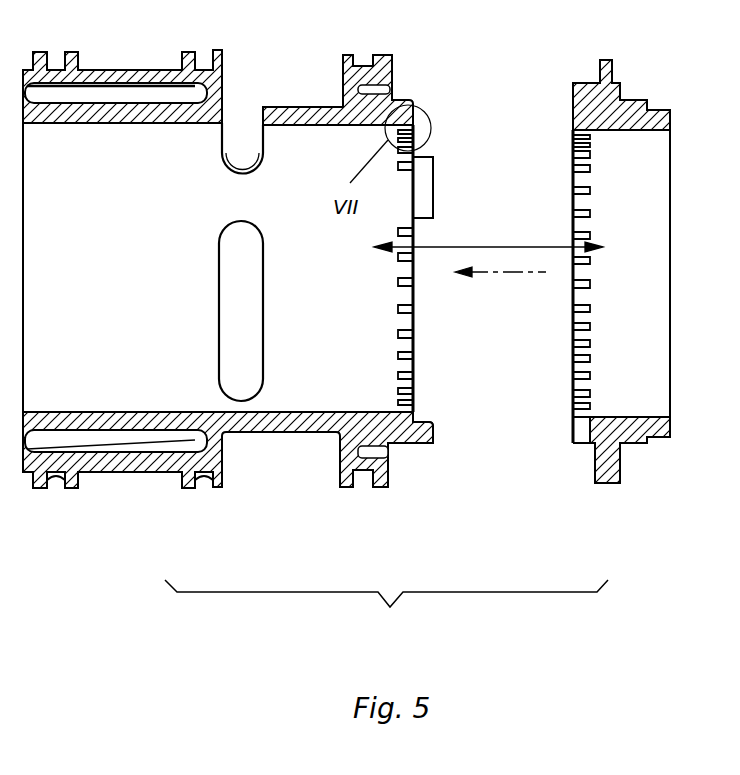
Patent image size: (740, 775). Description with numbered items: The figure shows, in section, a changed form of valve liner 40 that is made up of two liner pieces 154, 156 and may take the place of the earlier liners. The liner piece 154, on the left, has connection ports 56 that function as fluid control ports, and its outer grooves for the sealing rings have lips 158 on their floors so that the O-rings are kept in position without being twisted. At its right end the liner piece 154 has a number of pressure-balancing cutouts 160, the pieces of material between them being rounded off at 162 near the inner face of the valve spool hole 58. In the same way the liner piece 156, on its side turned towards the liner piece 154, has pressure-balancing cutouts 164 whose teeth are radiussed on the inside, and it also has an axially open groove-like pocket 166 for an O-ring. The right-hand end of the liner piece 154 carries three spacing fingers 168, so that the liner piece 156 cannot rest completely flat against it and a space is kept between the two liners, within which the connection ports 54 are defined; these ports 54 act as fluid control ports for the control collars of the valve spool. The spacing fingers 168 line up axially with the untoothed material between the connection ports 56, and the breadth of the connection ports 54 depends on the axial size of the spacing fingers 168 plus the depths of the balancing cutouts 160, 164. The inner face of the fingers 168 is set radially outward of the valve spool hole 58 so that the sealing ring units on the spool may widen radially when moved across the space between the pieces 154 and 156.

The valve liner 40 is at (386, 611).
The connection ports 54 is at (497, 238).
The connection ports 56 is at (262, 326).
The valve spool hole 58 is at (108, 127).
The liner piece 154 is at (145, 478).
The liner piece 156 is at (636, 448).
The lips 158 is at (60, 480).
The pressure-balancing cutouts 160 is at (410, 355).
The rounded-off pieces of material 162 is at (427, 115).
The pressure-balancing cutouts 164 is at (573, 346).
The groove-like pocket 166 is at (612, 485).
The spacing fingers 168 is at (428, 192).